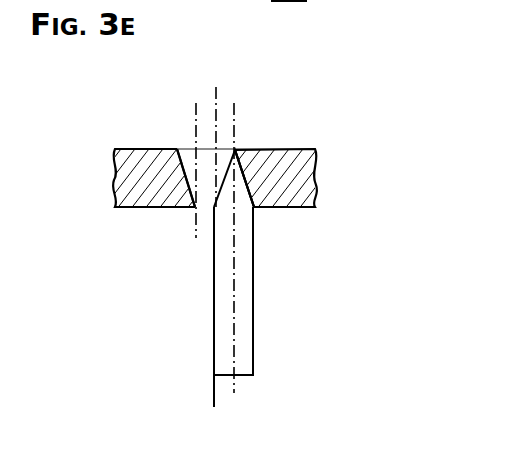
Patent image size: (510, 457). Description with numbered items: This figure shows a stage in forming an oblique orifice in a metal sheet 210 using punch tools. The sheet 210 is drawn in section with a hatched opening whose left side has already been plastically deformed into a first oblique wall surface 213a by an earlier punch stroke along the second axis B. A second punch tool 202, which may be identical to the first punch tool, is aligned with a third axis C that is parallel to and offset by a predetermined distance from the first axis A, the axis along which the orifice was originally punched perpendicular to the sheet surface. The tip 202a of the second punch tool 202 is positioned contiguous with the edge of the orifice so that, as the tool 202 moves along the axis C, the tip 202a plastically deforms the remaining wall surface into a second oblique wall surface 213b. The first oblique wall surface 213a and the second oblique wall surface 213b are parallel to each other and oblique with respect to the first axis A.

The metal sheet 210 is at (298, 178).
The first oblique wall surface 213a is at (186, 162).
The second oblique wall surface 213b is at (250, 173).
The second punch tool 202 is at (243, 347).
The tip 202a is at (228, 164).
The first axis A is at (217, 90).
The second axis B is at (196, 122).
The third axis C is at (237, 118).